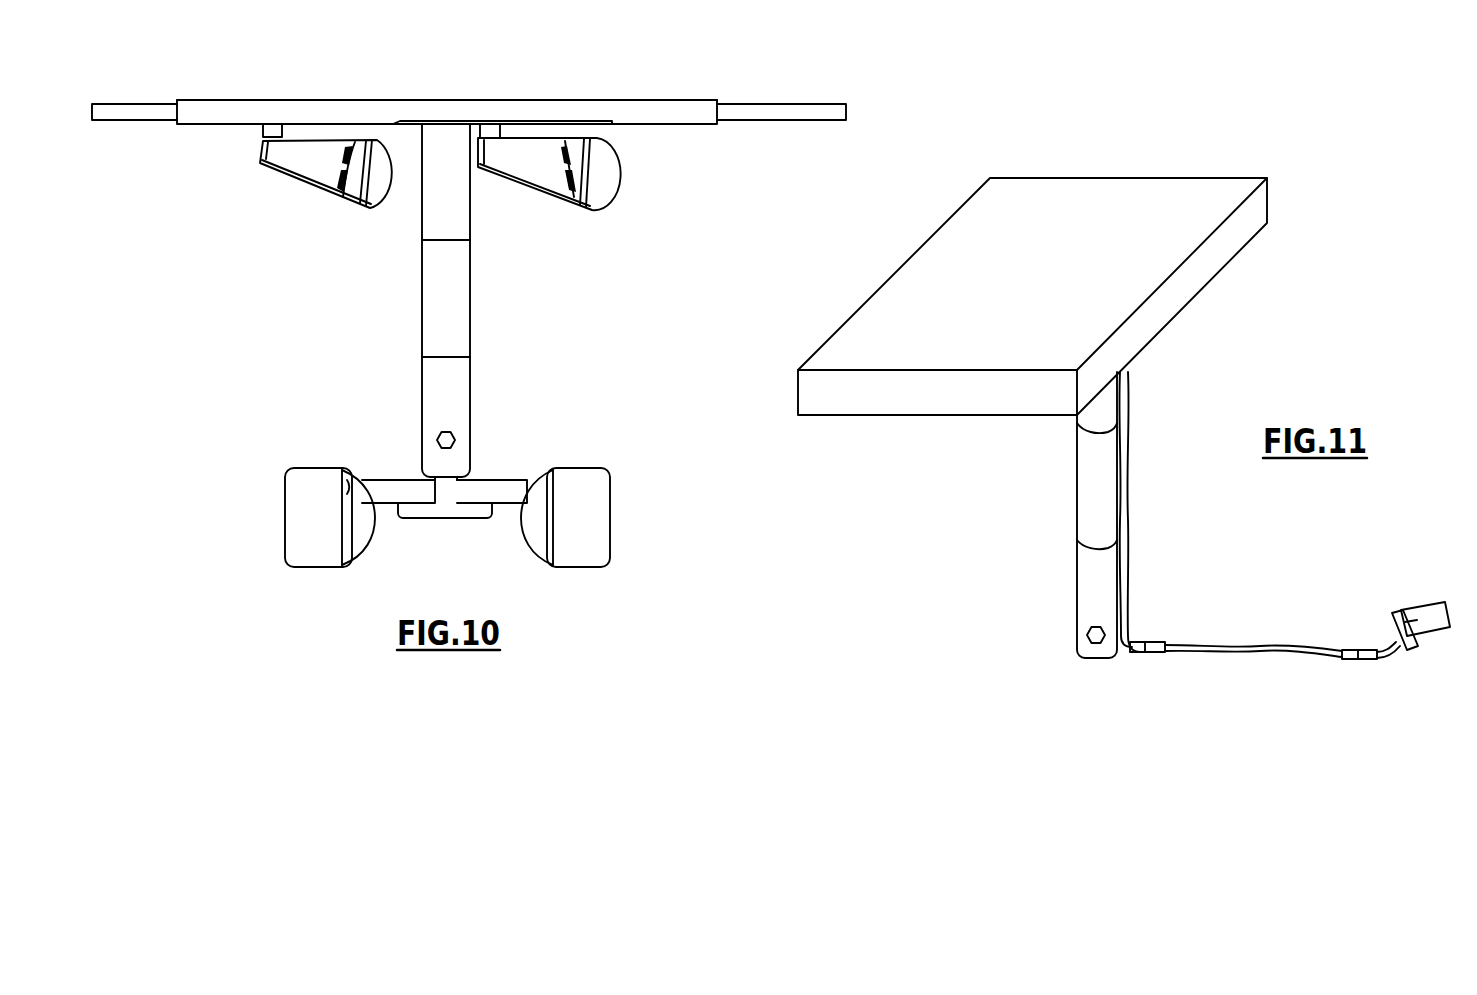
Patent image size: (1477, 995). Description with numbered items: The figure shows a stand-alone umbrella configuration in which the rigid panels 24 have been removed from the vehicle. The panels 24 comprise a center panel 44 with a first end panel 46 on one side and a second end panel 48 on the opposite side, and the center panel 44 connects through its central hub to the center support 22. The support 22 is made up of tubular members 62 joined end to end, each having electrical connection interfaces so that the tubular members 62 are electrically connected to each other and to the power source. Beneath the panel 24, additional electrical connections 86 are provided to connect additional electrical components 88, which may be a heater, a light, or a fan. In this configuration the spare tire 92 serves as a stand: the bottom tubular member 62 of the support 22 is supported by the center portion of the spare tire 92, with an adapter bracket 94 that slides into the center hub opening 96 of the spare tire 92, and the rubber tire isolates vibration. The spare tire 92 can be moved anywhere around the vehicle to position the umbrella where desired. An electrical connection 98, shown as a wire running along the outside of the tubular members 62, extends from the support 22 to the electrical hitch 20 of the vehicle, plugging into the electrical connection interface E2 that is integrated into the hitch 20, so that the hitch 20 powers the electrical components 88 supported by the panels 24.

In FIG. 11, the electrical hitch 20 is at (1411, 612).
In FIG. 10, the center support 22 is at (364, 338).
In FIG. 10, the rigid panel 24 is at (378, 90).
In FIG. 11, the rigid panel 24 is at (1112, 196).
In FIG. 10, the center panel 44 is at (460, 107).
In FIG. 10, the first end panel 46 is at (122, 107).
In FIG. 10, the second end panel 48 is at (760, 107).
In FIG. 10, the tubular member 62 is at (432, 205).
In FIG. 11, the tubular member 62 is at (1090, 412).
In FIG. 10, the additional electrical connection 86 is at (263, 133).
In FIG. 10, the electrical component 88 is at (299, 172).
In FIG. 10, the spare tire 92 is at (602, 529).
In FIG. 10, the adapter bracket 94 is at (447, 512).
In FIG. 10, the center hub opening 96 is at (460, 492).
In FIG. 11, the electrical connection 98 is at (1132, 520).
In FIG. 11, the electrical connection interface E2 is at (1396, 634).